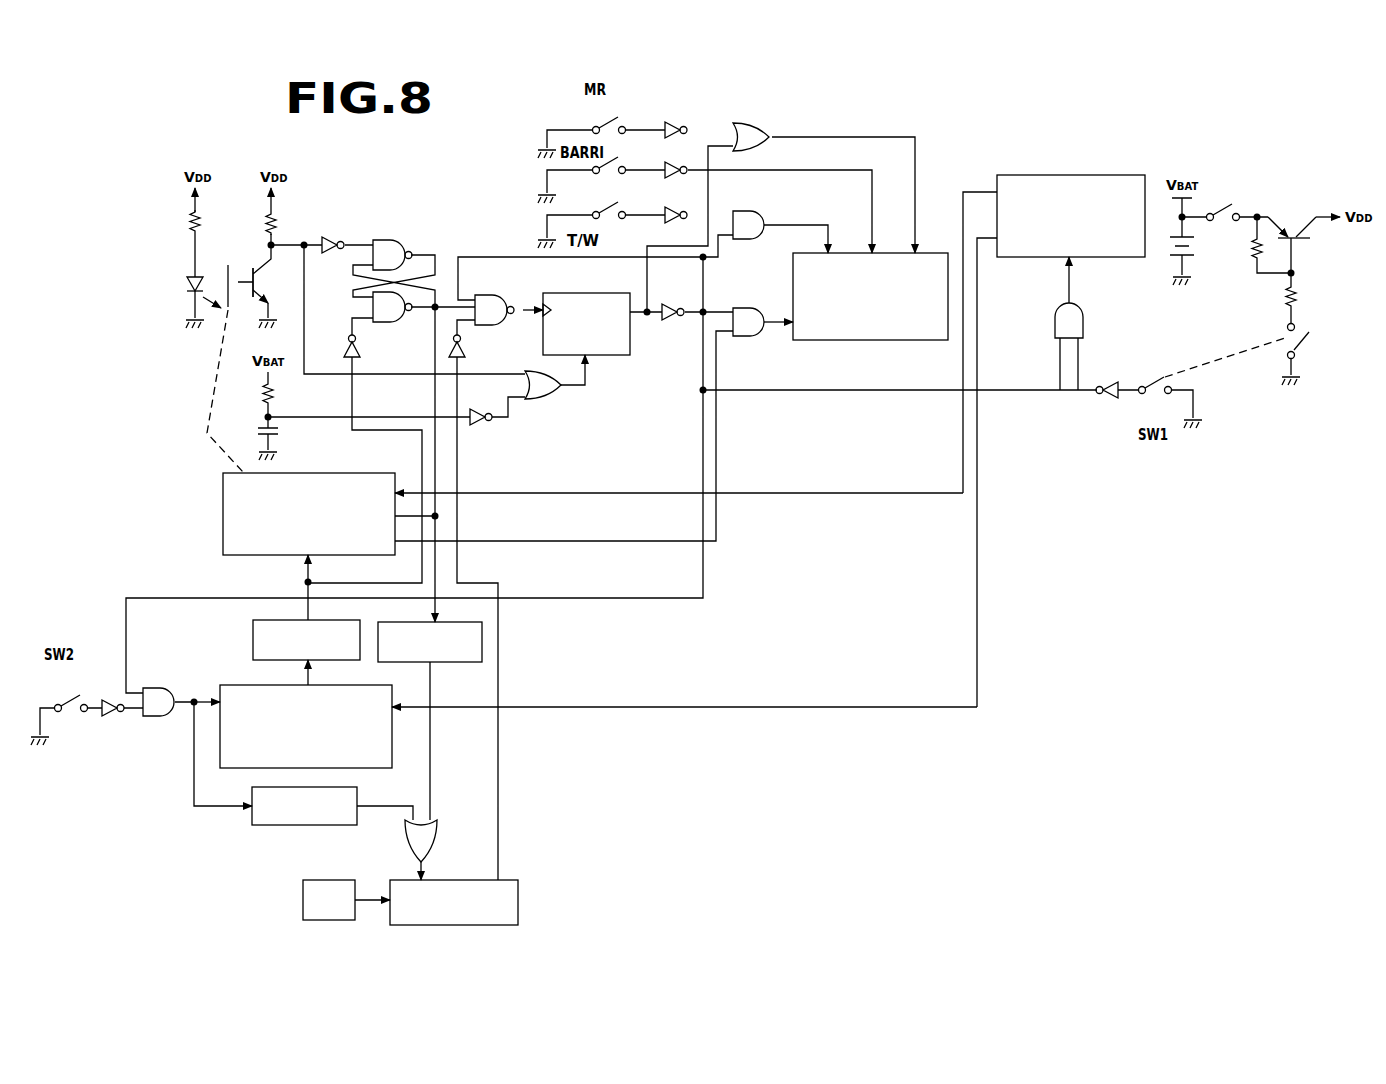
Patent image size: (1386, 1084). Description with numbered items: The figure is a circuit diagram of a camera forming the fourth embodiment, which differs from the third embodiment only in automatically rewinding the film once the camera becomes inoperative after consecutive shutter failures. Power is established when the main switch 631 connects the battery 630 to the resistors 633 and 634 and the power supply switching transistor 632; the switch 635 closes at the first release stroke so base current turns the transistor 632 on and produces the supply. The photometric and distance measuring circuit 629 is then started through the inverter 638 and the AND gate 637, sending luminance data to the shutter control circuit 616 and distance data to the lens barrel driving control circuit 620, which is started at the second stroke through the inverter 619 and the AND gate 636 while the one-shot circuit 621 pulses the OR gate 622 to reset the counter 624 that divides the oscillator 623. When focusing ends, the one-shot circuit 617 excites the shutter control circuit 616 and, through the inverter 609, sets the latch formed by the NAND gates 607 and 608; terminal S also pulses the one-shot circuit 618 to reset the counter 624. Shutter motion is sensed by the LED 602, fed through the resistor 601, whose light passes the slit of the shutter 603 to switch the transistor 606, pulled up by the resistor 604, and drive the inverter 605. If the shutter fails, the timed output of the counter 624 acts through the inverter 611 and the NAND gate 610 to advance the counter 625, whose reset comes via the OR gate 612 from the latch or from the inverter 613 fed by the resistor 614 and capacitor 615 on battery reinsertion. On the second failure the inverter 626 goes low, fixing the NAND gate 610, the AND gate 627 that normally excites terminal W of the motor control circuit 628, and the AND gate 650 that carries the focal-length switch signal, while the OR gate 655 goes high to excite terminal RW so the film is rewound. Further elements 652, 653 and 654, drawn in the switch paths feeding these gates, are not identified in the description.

The resistor 601 is at (190, 217).
The LED 602 is at (187, 288).
The shutter 603 is at (228, 268).
The resistor 604 is at (277, 220).
The inverter 605 is at (334, 238).
The transistor 606 is at (262, 293).
The NAND gate 607 is at (395, 240).
The NAND gate 608 is at (392, 322).
The inverter 609 is at (347, 342).
The NAND gate 610 is at (494, 296).
The inverter 611 is at (466, 350).
The OR gate 612 is at (546, 400).
The inverter 613 is at (482, 426).
The resistor 614 is at (276, 394).
The capacitor 615 is at (280, 432).
The shutter control circuit 616 is at (223, 503).
The one-shot circuit 617 is at (253, 632).
The one-shot circuit 618 is at (466, 662).
The inverter 619 is at (110, 698).
The lens barrel driving control circuit 620 is at (226, 685).
The one-shot circuit 621 is at (266, 825).
The OR gate 622 is at (437, 838).
The oscillator 623 is at (303, 902).
The counter 624 is at (518, 900).
The counter 625 is at (612, 355).
The inverter 626 is at (673, 320).
The AND gate 627 is at (745, 337).
The motor control circuit 628 is at (820, 340).
The photometric and distance measuring circuit 629 is at (1017, 175).
The battery 630 is at (1168, 250).
The switch 631 is at (1222, 204).
The transistor 632 is at (1292, 232).
The resistor 633 is at (1251, 250).
The resistor 634 is at (1283, 300).
The switch 635 is at (1302, 350).
The AND gate 636 is at (155, 717).
The AND gate 637 is at (1055, 327).
The inverter 638 is at (1108, 400).
The AND gate 650 is at (752, 240).
The inverter 652 is at (670, 208).
The inverter 653 is at (670, 163).
The inverter 654 is at (672, 122).
The OR gate 655 is at (752, 123).